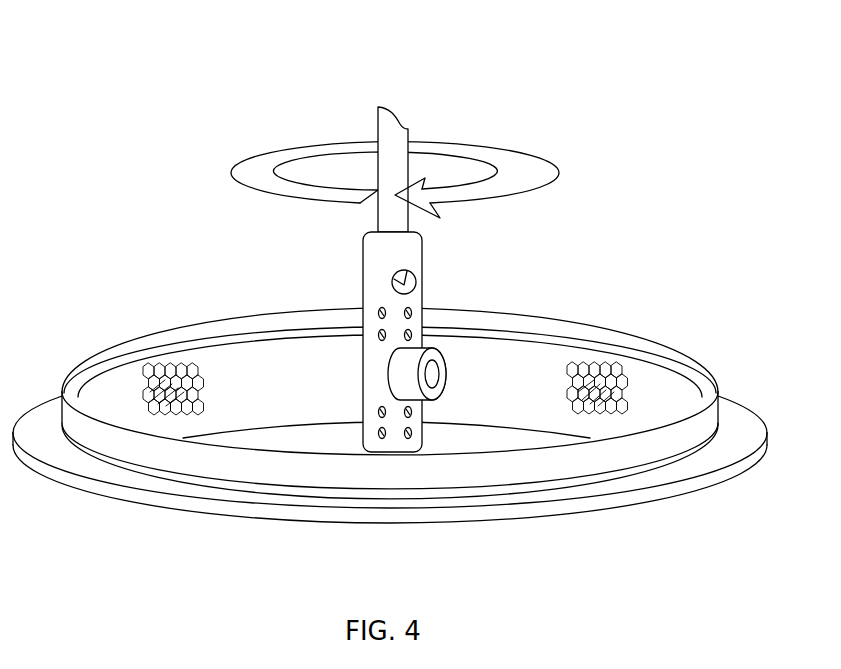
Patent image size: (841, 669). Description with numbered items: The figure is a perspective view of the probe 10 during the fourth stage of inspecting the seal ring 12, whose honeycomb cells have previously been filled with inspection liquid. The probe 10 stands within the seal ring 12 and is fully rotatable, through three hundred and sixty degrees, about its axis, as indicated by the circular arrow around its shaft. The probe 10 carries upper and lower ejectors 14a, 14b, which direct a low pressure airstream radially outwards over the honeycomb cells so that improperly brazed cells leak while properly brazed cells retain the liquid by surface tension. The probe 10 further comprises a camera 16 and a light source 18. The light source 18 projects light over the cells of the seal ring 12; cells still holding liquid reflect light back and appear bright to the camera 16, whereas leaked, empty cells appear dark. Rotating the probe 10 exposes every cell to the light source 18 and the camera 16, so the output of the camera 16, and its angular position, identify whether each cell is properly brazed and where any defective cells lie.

The probe 10 is at (402, 117).
The seal ring 12 is at (662, 335).
The upper ejector 14a is at (398, 322).
The lower ejector 14b is at (398, 422).
The camera 16 is at (446, 374).
The light source 18 is at (417, 282).